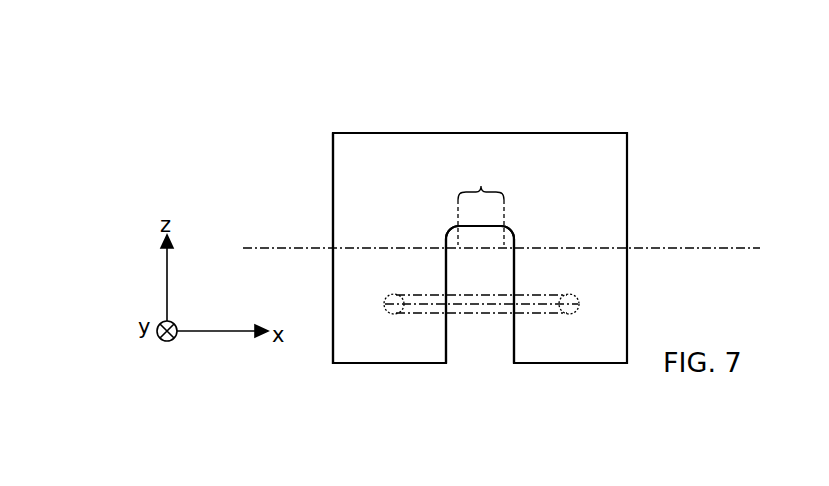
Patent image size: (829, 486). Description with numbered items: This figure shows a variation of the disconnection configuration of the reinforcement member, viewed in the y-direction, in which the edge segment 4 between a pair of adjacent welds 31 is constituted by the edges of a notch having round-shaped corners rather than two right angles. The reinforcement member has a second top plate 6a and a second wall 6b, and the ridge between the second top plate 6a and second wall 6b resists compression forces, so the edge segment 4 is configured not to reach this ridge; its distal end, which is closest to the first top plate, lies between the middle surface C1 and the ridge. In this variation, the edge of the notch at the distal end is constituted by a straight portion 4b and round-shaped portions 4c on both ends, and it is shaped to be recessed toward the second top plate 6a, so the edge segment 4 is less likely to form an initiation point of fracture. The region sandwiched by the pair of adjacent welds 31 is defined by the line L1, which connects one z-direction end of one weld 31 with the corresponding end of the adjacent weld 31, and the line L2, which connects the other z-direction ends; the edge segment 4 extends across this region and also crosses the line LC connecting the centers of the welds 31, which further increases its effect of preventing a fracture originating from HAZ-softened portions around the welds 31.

The second top plate 6a is at (602, 133).
The second wall 6b is at (355, 158).
The weld 31 is at (392, 294).
The line L1 is at (426, 294).
The line L2 is at (528, 313).
The line LC is at (477, 304).
The middle surface C1 is at (483, 247).
The edge segment 4 is at (445, 343).
The straight portion 4b is at (481, 178).
The corner portion of slot 4c is at (445, 228).